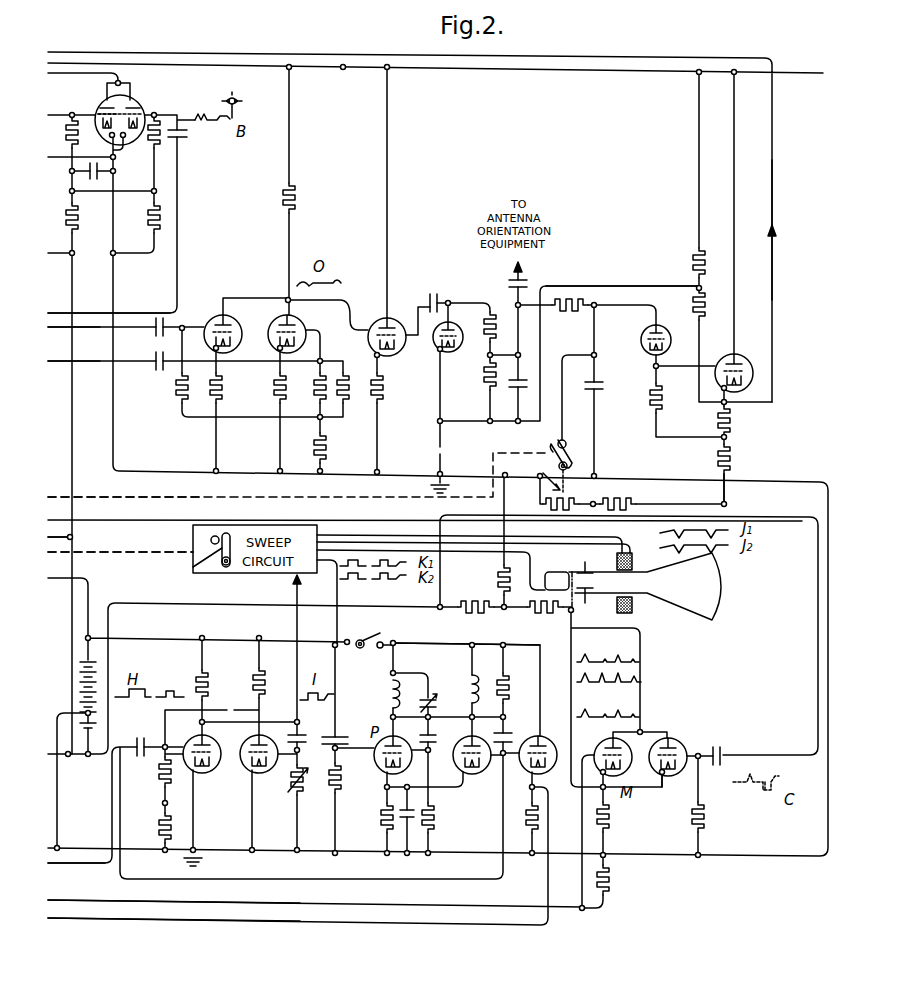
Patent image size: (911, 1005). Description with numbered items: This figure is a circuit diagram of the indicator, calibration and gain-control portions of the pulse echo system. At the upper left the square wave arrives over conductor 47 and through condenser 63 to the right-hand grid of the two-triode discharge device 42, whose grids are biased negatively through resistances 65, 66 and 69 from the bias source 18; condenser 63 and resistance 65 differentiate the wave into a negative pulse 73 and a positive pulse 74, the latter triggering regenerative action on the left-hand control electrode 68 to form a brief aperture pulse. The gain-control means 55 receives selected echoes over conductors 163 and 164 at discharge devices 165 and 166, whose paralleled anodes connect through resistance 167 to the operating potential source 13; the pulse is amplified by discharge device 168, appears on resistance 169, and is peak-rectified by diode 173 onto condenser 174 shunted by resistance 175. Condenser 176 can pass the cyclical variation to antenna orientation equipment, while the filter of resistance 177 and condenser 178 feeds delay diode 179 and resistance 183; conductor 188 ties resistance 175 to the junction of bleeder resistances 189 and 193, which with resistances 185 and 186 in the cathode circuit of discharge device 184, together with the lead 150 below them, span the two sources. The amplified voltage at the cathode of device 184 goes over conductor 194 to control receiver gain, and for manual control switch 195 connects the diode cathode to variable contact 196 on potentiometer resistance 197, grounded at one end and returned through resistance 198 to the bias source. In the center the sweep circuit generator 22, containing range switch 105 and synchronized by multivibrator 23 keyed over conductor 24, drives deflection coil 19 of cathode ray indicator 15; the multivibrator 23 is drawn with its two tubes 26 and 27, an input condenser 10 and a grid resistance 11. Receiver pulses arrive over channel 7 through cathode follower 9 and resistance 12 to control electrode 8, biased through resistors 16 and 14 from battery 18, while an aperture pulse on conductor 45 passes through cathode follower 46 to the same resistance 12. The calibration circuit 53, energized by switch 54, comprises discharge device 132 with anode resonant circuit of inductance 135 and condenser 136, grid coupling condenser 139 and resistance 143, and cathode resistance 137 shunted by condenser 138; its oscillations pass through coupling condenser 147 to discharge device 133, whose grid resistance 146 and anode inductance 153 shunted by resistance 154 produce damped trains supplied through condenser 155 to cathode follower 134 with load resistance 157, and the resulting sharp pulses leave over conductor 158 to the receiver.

The conductor 194 is at (60, 54).
The left-hand control electrode 68 is at (100, 112).
The discharge device 42 is at (135, 105).
The negative pulse 73 is at (206, 117).
The positive pulse 74 is at (236, 106).
The condenser 63 is at (189, 135).
The resistance 69 is at (76, 136).
The resistance 65 is at (157, 140).
The resistance 66 is at (80, 210).
The resistance 167 is at (283, 204).
The conductor 47 is at (88, 311).
The conductor 163 is at (94, 330).
The conductor 164 is at (94, 364).
The discharge device 165 is at (240, 330).
The discharge device 166 is at (302, 331).
The discharge device 168 is at (394, 318).
The resistance 169 is at (385, 389).
The diode 173 is at (462, 325).
The resistance 175 is at (486, 380).
The condenser 176 is at (508, 286).
The condenser 174 is at (524, 384).
The resistance 177 is at (588, 304).
The gain control means 55 is at (592, 278).
The conductor 188 is at (638, 286).
The resistance 189 is at (702, 262).
The resistance 193 is at (702, 308).
The delay diode 179 is at (666, 327).
The discharge device 184 is at (744, 358).
The condenser 178 is at (604, 386).
The resistance 183 is at (652, 405).
The resistance 185 is at (732, 421).
The resistance 186 is at (732, 449).
The conductor 150 is at (730, 473).
The switch 195 is at (566, 446).
The variable contact 196 is at (548, 478).
The potentiometer resistance 197 is at (580, 501).
The resistance 198 is at (638, 499).
The conductor 45 is at (114, 517).
The sweep circuit generator 22 is at (192, 530).
The switch 105 is at (192, 567).
The resistor 14 is at (472, 602).
The resistor 16 is at (527, 603).
The control electrode 8 is at (566, 572).
The deflection coil 19 is at (632, 553).
The cathode ray indicator 15 is at (676, 604).
The source of operating potential 13 is at (96, 678).
The source of bias potential 18 is at (79, 732).
The capacitor 10 is at (137, 755).
The resistor 11 is at (158, 786).
The multivibrator 23 is at (232, 801).
The electron tube 26 is at (210, 747).
The electron tube 27 is at (266, 770).
The coupling condenser 139 is at (348, 736).
The resistance 143 is at (342, 775).
The switch 54 is at (366, 648).
The calibration circuit 53 is at (458, 665).
The inductance 135 is at (390, 697).
The condenser 136 is at (438, 697).
The coupling condenser 147 is at (436, 741).
The discharge device 132 is at (408, 764).
The cathode bias resistance 137 is at (381, 813).
The condenser 138 is at (410, 818).
The resistance 146 is at (434, 813).
The inductance 153 is at (480, 677).
The resistance 154 is at (509, 680).
The condenser 155 is at (510, 733).
The discharge device 133 is at (482, 768).
The discharge device 134 is at (548, 739).
The load resistance 157 is at (538, 813).
The electron discharge device 9 is at (627, 742).
The cathode follower 46 is at (680, 749).
The resistance 12 is at (609, 812).
The conductor 24 is at (74, 864).
The channel 7 is at (308, 903).
The conductor 158 is at (456, 926).